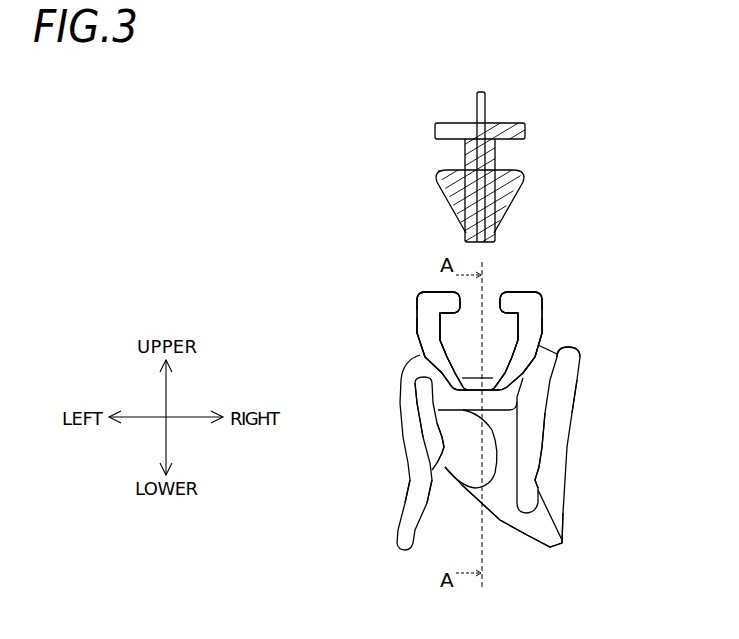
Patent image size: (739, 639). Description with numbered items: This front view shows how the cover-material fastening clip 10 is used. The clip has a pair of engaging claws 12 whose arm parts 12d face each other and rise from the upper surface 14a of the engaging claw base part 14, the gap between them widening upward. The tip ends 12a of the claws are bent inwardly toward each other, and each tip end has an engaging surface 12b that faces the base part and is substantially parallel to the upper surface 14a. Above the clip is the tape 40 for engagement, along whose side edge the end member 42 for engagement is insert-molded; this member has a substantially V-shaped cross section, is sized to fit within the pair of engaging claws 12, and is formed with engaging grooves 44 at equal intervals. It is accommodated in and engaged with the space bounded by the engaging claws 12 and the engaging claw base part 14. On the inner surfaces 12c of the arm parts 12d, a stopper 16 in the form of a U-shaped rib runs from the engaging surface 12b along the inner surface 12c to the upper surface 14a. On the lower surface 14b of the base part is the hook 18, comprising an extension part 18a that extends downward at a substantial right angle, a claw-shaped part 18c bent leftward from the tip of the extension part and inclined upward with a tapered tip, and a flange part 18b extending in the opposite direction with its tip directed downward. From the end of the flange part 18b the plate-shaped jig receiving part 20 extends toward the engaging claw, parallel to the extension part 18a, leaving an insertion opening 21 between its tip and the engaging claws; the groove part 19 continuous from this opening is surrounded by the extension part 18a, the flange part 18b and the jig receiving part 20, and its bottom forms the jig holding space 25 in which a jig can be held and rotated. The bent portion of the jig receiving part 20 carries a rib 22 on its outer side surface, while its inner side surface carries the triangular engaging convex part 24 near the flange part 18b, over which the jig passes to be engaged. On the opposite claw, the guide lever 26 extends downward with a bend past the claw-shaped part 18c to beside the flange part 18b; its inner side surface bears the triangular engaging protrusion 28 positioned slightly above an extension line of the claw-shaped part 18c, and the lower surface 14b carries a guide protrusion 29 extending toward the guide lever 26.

The cover-material fastening clip 10 is at (617, 257).
The engaging claws 12 is at (410, 357).
The tip ends 12a is at (440, 303).
The engaging surface 12b is at (420, 299).
The inner surfaces 12c is at (416, 330).
The arm parts 12d is at (416, 348).
The engaging claw base part 14 is at (460, 392).
The upper surface 14a is at (500, 378).
The lower surface 14b is at (438, 425).
The stopper 16 is at (440, 370).
The hook 18 is at (553, 510).
The extension part 18a is at (508, 458).
The flange part 18b is at (508, 516).
The claw-shaped part 18c is at (432, 475).
The groove part 19 is at (530, 422).
The jig receiving part 20 is at (553, 438).
The insertion opening 21 is at (578, 347).
The rib 22 is at (575, 405).
The engaging convex part 24 is at (540, 485).
The jig holding space 25 is at (548, 540).
The guide lever 26 is at (410, 522).
The engaging protrusion 28 is at (442, 447).
The guide protrusion 29 is at (455, 402).
The tape for engagement 40 is at (486, 96).
The end member for engagement 42 is at (502, 168).
The engaging grooves 44 is at (466, 198).